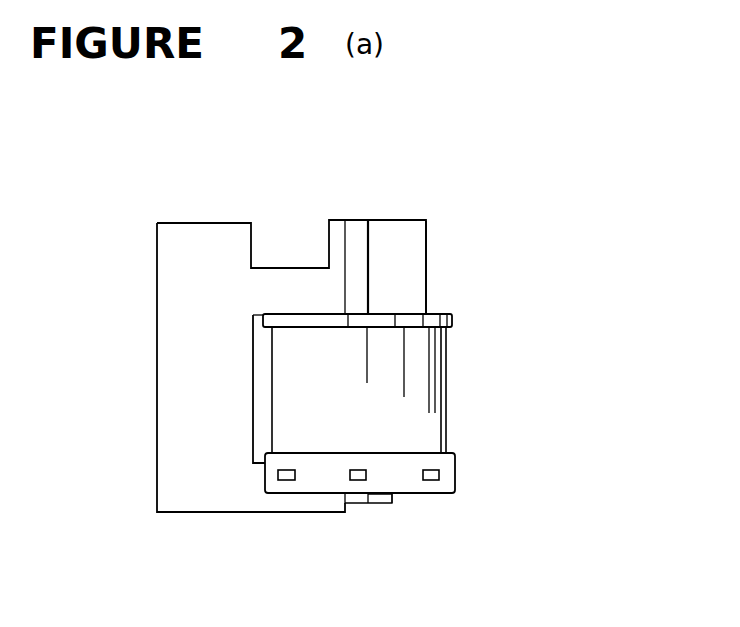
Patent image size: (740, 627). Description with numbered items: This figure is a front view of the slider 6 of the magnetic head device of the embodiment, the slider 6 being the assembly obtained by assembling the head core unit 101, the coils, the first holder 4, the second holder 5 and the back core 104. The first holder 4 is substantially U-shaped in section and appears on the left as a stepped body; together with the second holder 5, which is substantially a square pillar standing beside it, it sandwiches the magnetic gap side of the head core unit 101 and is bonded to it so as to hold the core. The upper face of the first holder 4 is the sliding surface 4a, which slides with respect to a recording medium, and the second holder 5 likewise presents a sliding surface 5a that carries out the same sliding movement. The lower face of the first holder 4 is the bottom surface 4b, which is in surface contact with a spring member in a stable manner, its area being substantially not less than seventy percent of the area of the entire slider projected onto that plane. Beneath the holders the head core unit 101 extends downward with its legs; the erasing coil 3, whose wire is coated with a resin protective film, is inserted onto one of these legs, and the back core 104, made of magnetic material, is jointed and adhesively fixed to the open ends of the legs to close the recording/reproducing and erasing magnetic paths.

The erasing coil 3 is at (408, 480).
The first holder 4 is at (207, 259).
The sliding surface 4a is at (173, 222).
The bottom surface 4b is at (200, 514).
The second holder 5 is at (395, 248).
The sliding surface 5a is at (388, 218).
The slider 6 is at (237, 160).
The head core unit 101 is at (353, 238).
The back core 104 is at (378, 504).